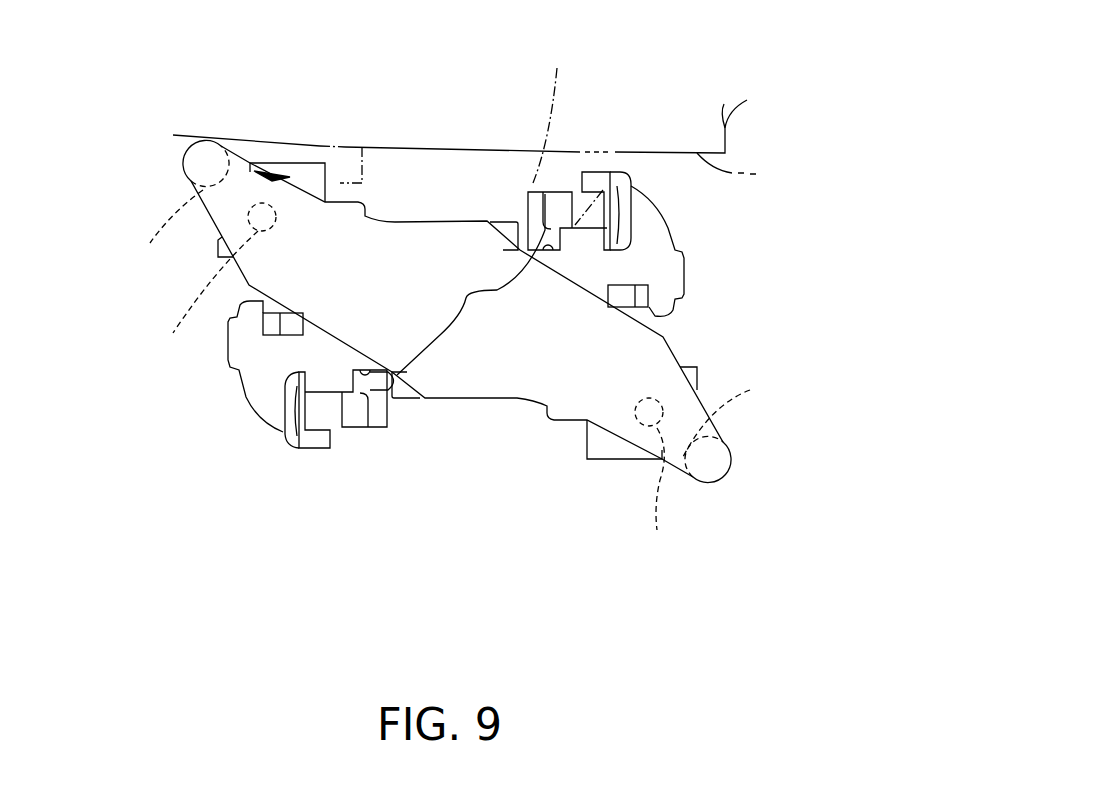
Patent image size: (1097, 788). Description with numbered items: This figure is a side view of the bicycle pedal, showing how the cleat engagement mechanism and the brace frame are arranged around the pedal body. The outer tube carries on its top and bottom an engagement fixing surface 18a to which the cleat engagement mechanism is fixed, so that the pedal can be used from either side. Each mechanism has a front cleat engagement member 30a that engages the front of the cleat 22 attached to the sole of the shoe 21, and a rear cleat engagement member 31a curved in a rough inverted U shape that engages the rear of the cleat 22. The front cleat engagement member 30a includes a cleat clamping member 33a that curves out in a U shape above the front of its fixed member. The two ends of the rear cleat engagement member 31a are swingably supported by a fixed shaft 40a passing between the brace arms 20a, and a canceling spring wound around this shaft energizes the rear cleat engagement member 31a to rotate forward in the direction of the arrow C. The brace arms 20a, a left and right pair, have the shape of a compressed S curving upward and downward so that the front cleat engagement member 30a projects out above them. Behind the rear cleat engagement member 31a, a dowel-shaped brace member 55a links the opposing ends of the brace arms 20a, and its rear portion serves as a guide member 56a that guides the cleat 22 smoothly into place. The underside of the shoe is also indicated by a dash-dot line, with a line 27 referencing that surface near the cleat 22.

The engagement fixing surface 18a is at (466, 296).
The brace arms 20a is at (667, 362).
The shoe 21 is at (745, 100).
The cleat 22 is at (554, 108).
The plate surface line 27 is at (760, 175).
The front cleat engagement member 30a is at (613, 180).
The rear cleat engagement member 31a is at (300, 160).
The cleat clamping member 33a is at (628, 185).
The fixed shaft 40a is at (425, 385).
The brace member 55a is at (473, 323).
The guide member 56a is at (184, 148).
The direction of forward rotation C is at (250, 163).